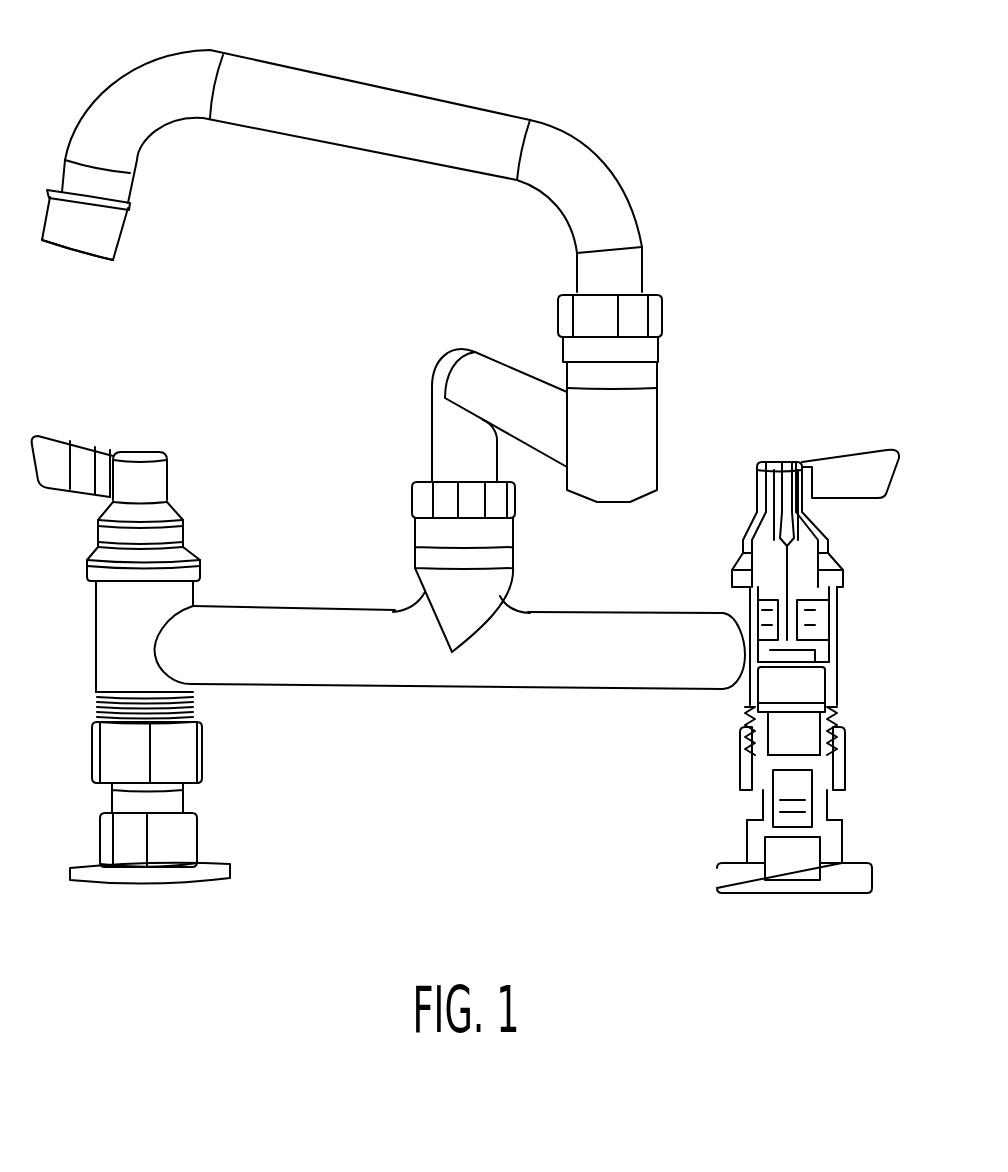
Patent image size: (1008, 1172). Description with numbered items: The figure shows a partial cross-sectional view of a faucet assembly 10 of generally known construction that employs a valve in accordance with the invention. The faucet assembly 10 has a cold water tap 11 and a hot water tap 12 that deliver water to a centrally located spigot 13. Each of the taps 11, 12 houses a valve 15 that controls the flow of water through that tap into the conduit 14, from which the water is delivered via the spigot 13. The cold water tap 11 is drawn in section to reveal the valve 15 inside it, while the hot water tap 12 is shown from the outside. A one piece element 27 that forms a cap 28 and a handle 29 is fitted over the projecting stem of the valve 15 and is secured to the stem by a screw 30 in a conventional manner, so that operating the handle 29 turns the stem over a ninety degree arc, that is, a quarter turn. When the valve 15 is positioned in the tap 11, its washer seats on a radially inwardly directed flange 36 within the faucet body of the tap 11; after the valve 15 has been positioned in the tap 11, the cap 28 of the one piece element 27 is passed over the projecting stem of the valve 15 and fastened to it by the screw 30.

The faucet assembly 10 is at (636, 120).
The cold water tap 11 is at (842, 565).
The hot water tap 12 is at (178, 535).
The spigot 13 is at (356, 92).
The conduit 14 is at (318, 675).
The valve 15 is at (108, 612).
The one piece element 27 is at (126, 455).
The cap 28 is at (752, 527).
The handle 29 is at (885, 455).
The screw 30 is at (778, 458).
The radially inwardly directed flange 36 is at (813, 662).